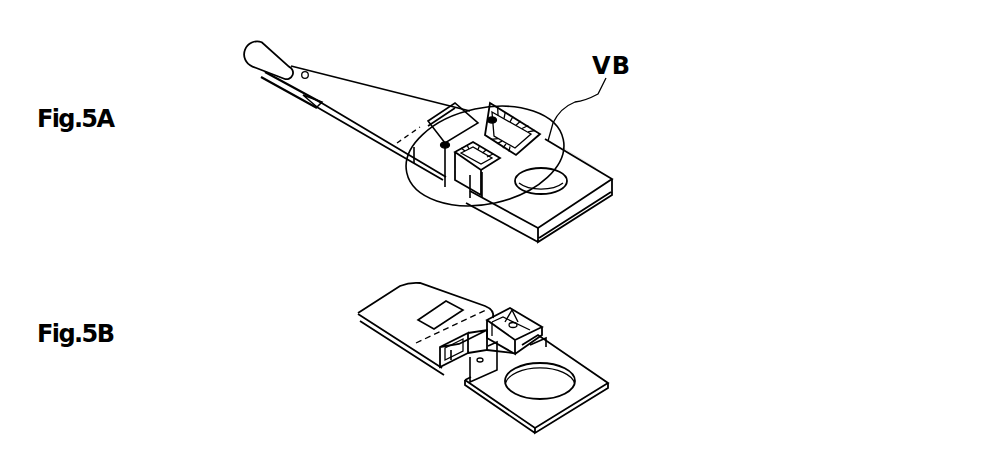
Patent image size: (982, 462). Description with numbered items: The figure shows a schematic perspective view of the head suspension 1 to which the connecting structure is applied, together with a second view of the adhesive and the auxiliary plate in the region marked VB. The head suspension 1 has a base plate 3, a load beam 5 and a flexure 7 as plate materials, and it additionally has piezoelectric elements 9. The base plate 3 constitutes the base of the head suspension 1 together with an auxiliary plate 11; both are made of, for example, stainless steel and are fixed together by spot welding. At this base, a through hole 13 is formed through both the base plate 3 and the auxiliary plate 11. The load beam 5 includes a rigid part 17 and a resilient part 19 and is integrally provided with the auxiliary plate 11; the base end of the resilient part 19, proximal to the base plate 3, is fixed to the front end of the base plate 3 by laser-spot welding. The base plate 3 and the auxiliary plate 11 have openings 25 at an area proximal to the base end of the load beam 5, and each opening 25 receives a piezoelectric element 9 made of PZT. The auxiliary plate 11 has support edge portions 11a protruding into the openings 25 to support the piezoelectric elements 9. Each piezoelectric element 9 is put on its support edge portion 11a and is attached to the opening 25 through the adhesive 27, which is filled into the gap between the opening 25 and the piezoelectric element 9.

In FIG. 5A, the head suspension 1 is at (357, 71).
In FIG. 5A, the base plate 3 is at (588, 182).
In FIG. 5A, the load beam 5 is at (386, 89).
In FIG. 5A, the flexure 7 is at (283, 100).
In FIG. 5A, the piezoelectric element 9 is at (519, 129).
In FIG. 5A, the auxiliary plate 11 is at (590, 220).
In FIG. 5B, the auxiliary plate 11 is at (600, 372).
In FIG. 5A, the support edge portion 11a is at (430, 196).
In FIG. 5B, the support edge portion 11a is at (447, 370).
In FIG. 5A, the through hole 13 is at (527, 173).
In FIG. 5A, the rigid part 17 is at (367, 109).
In FIG. 5B, the rigid part 17 is at (380, 312).
In FIG. 5A, the resilient part 19 is at (465, 110).
In FIG. 5B, the resilient part 19 is at (462, 297).
In FIG. 5A, the opening 25 is at (542, 133).
In FIG. 5A, the adhesive 27 is at (467, 139).
In FIG. 5B, the adhesive 27 is at (436, 349).